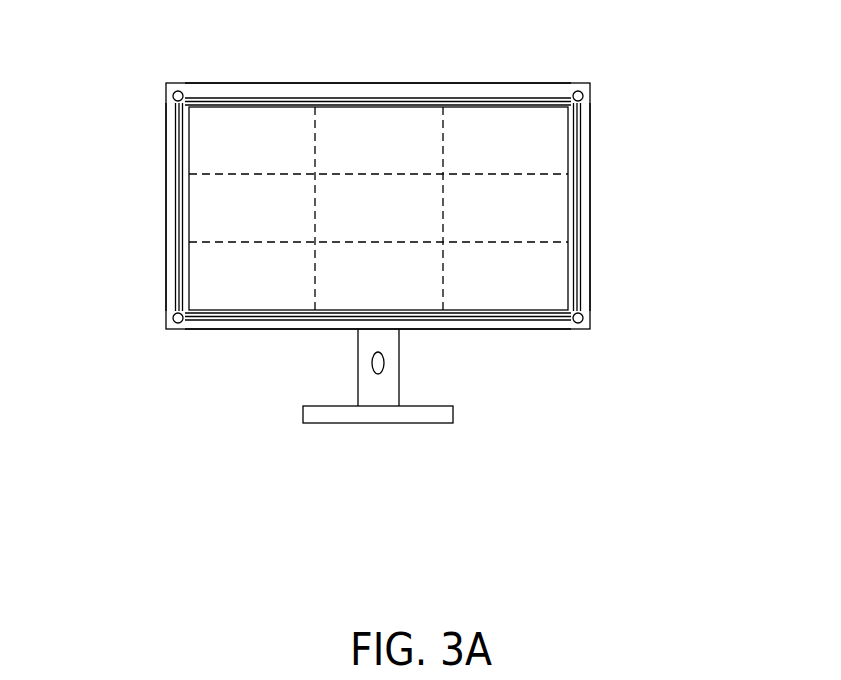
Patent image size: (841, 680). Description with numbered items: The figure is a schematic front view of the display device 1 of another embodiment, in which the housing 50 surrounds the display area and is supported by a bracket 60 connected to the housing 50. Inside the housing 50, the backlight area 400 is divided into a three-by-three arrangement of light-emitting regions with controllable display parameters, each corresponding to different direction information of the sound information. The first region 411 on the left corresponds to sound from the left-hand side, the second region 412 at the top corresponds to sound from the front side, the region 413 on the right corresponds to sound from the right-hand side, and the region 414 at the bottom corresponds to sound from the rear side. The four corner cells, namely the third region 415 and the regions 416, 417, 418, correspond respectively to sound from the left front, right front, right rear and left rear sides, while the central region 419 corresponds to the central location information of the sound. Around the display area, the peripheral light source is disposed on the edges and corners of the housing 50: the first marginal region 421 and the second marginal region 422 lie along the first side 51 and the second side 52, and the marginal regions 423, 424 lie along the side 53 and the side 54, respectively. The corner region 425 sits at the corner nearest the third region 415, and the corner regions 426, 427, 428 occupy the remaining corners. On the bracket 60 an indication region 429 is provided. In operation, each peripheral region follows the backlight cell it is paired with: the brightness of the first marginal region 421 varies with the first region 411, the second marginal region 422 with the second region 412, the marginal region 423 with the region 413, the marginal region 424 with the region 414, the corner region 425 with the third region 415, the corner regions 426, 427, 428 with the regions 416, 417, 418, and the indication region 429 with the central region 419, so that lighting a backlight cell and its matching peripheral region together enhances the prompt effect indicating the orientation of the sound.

The display device 1 is at (118, 18).
The housing 50 is at (562, 72).
The first side 51 is at (166, 218).
The second side 52 is at (296, 83).
The side 53 is at (592, 207).
The side 54 is at (236, 330).
The bracket 60 is at (408, 393).
The backlight area 400 is at (326, 304).
The first region 411 is at (225, 223).
The second region 412 is at (352, 155).
The region 413 is at (478, 223).
The region 414 is at (352, 291).
The third region 415 is at (225, 155).
The region 416 is at (478, 155).
The region 417 is at (478, 291).
The region 418 is at (225, 291).
The central region 419 is at (352, 223).
The first marginal region 421 is at (160, 169).
The second marginal region 422 is at (405, 84).
The marginal region 423 is at (598, 168).
The marginal region 424 is at (339, 326).
The corner region 425 is at (155, 80).
The corner region 426 is at (598, 82).
The corner region 427 is at (602, 327).
The corner region 428 is at (157, 336).
The indication region 429 is at (401, 366).